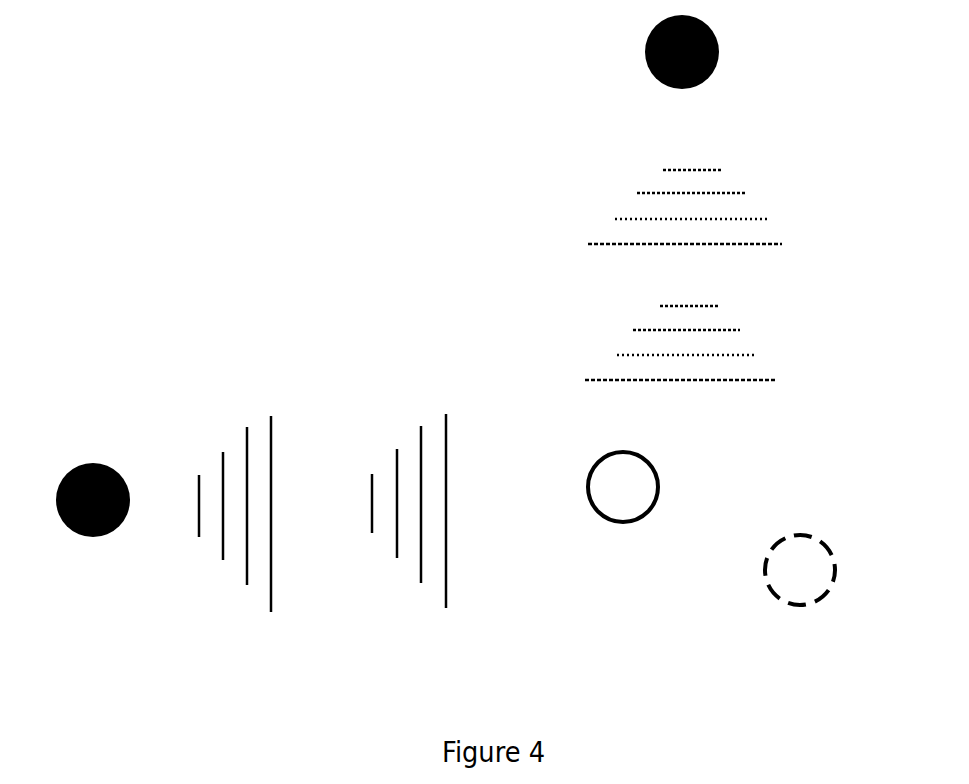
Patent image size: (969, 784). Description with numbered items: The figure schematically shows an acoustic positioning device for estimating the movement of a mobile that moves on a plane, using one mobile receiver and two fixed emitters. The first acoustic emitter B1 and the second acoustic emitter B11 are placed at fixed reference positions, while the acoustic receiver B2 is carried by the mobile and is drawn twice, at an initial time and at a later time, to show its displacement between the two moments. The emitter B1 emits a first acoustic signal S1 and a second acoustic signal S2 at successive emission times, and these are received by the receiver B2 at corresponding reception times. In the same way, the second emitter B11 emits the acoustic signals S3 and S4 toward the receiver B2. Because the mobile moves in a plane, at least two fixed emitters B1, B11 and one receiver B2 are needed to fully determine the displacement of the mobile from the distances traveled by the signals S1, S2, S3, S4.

The second fixed acoustic emitter B11 is at (719, 48).
The acoustic signal S3 is at (767, 205).
The acoustic signal S4 is at (765, 382).
The acoustic emitter B1 is at (94, 537).
The first acoustic signal S1 is at (222, 583).
The second acoustic signal S2 is at (397, 583).
The acoustic receiver B2 is at (625, 524).